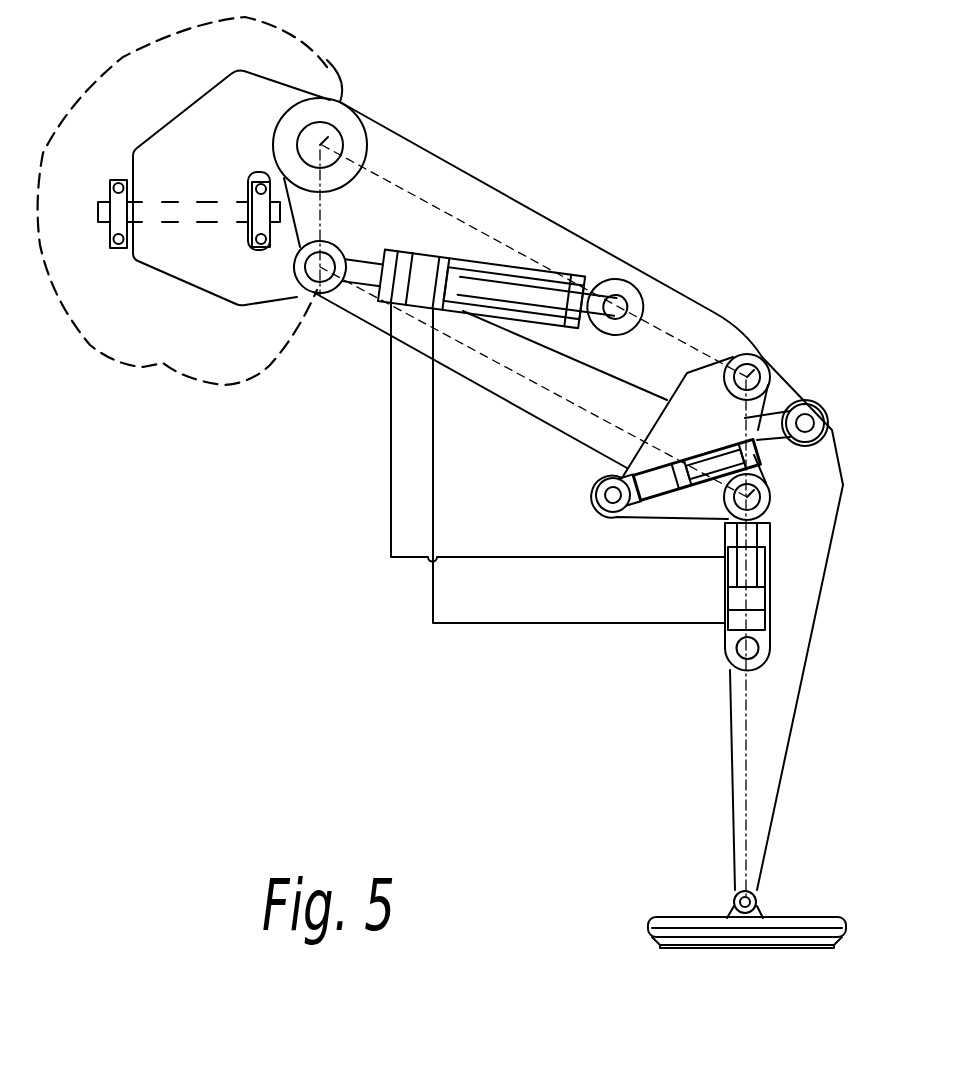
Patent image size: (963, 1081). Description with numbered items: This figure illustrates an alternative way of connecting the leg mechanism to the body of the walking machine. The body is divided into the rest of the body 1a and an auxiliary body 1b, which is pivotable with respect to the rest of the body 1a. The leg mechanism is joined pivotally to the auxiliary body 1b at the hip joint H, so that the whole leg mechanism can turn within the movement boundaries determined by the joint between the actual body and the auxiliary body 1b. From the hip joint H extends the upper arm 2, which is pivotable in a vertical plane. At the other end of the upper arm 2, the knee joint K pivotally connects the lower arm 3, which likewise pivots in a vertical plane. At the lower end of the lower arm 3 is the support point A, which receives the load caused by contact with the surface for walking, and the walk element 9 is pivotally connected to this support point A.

The rest of the body 1a is at (320, 65).
The auxiliary body 1b is at (213, 278).
The hip joint H is at (343, 135).
The upper arm 2 is at (560, 200).
The knee joint K is at (760, 363).
The lower arm 3 is at (728, 738).
The support point A is at (757, 903).
The walk element 9 is at (838, 920).